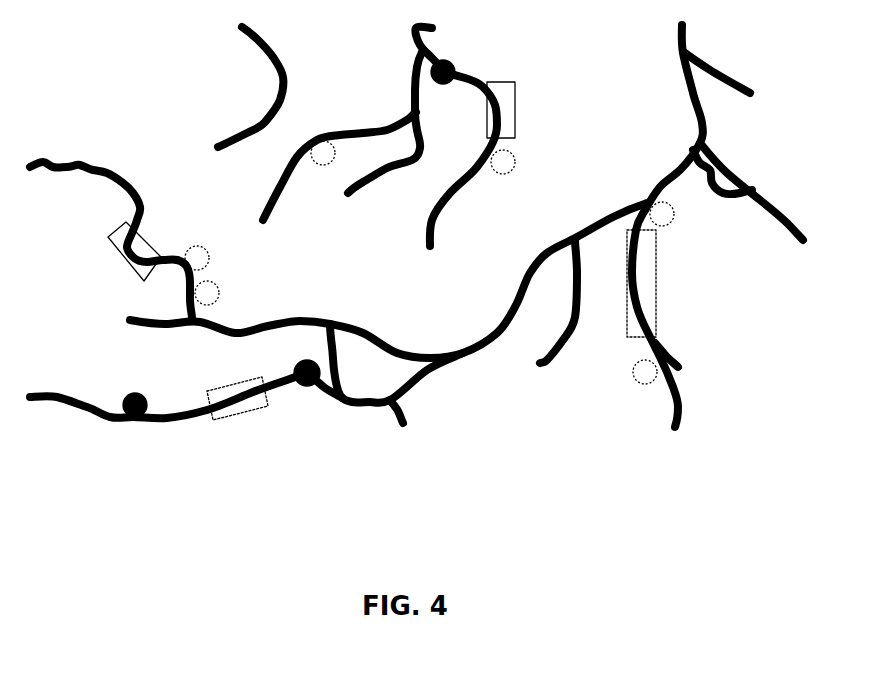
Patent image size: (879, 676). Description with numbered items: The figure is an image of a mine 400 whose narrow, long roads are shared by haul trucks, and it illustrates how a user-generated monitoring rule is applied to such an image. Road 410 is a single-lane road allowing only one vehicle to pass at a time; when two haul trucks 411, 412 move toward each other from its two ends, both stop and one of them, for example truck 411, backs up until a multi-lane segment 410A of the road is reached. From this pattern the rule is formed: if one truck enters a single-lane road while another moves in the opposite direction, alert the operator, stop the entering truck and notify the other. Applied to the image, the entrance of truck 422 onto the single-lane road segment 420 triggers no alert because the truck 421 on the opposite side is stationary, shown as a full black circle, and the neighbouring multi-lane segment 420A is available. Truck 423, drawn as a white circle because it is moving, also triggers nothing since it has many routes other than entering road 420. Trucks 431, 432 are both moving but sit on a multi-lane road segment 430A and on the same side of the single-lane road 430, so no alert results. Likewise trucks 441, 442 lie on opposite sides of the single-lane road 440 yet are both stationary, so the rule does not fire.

The mine 400 is at (542, 452).
The single-lane road 410 is at (657, 283).
The multi-lane road segment 410A is at (653, 178).
The haul truck 411 is at (670, 228).
The haul truck 412 is at (652, 390).
The single-lane road segment 420 is at (520, 107).
The multi-lane road segment 420A is at (368, 128).
The haul truck 421 is at (437, 90).
The haul truck 422 is at (518, 177).
The haul truck 423 is at (322, 167).
The single-lane road 430 is at (100, 235).
The multi-lane road segment 430A is at (178, 289).
The haul truck 431 is at (218, 282).
The haul truck 432 is at (207, 240).
The single-lane road 440 is at (252, 406).
The haul truck 441 is at (318, 390).
The haul truck 442 is at (145, 422).